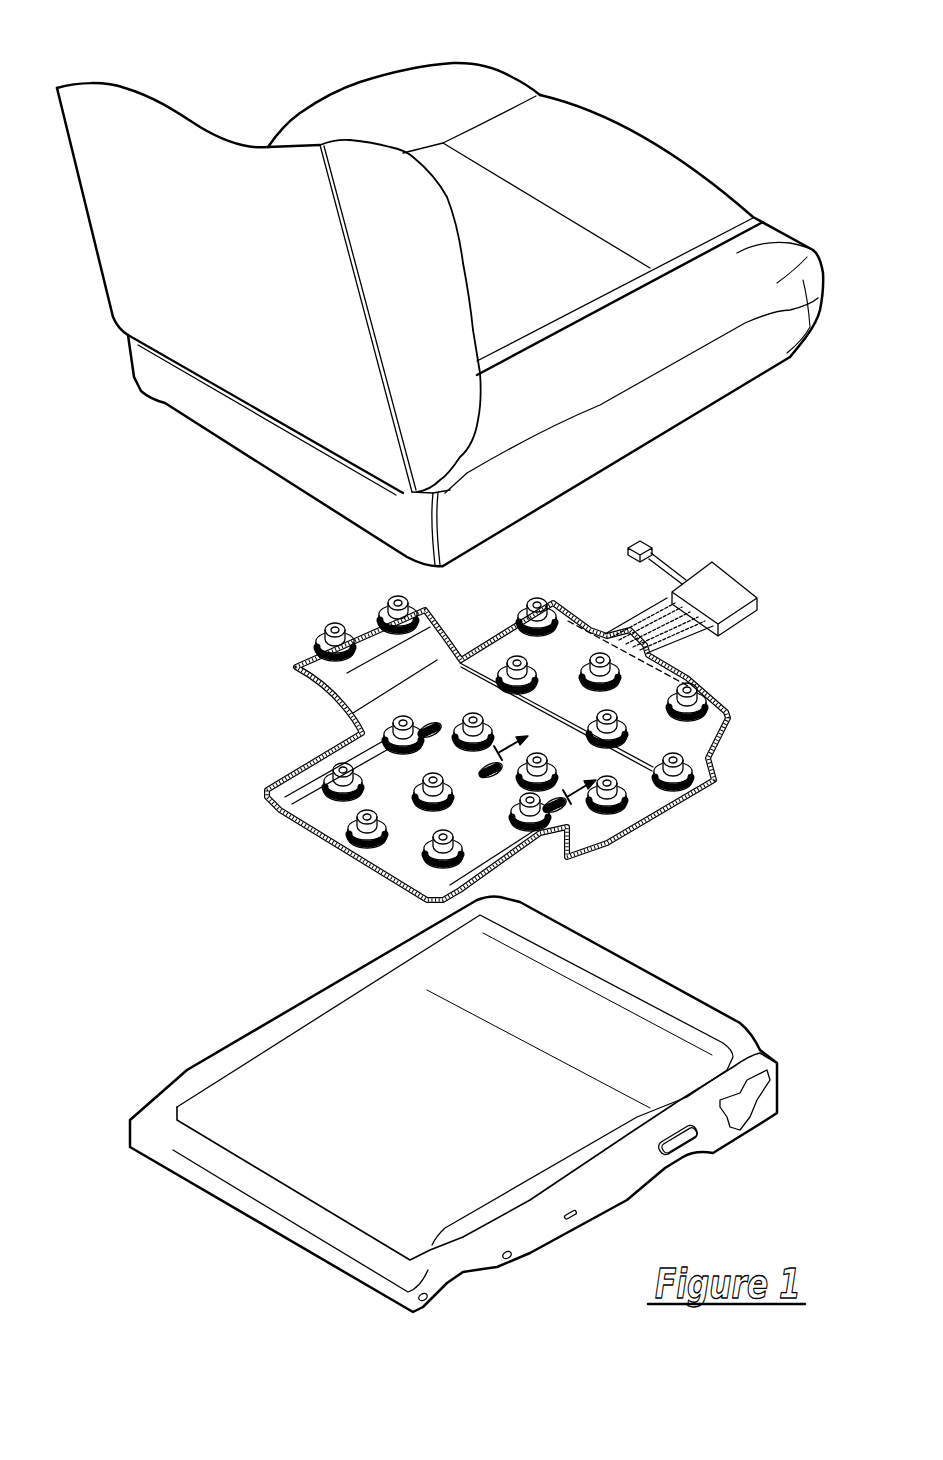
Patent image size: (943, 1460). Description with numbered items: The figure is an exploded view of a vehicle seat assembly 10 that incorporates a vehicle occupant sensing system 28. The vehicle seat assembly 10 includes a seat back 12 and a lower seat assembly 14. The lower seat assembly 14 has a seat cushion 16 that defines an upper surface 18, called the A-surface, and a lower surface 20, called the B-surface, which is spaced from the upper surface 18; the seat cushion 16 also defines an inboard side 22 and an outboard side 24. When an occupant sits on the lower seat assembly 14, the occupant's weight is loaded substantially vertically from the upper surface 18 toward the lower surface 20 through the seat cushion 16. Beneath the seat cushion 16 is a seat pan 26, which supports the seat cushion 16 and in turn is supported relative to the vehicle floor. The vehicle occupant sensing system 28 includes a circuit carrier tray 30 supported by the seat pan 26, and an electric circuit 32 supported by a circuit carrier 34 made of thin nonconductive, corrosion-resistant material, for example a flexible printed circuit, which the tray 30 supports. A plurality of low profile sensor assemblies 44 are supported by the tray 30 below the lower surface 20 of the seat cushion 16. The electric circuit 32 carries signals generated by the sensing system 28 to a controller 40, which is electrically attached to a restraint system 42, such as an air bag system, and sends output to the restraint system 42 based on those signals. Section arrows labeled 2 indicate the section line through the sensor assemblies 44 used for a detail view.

The vehicle seat assembly 10 is at (457, 674).
The seat back 12 is at (428, 301).
The lower seat assembly 14 is at (641, 396).
The seat cushion 16 is at (658, 359).
The upper surface 18 is at (546, 205).
The lower surface 20 is at (616, 461).
The inboard side 22 is at (404, 91).
The outboard side 24 is at (802, 316).
The seat pan 26 is at (453, 1104).
The vehicle occupant sensing system 28 is at (461, 715).
The circuit carrier tray 30 is at (480, 684).
The electric circuit 32 is at (626, 613).
The circuit carrier 34 is at (522, 865).
The controller 40 is at (683, 582).
The restraint system 42 is at (657, 526).
The low profile sensor assemblies 44 is at (733, 675).
The section line 2- 2 is at (545, 755).